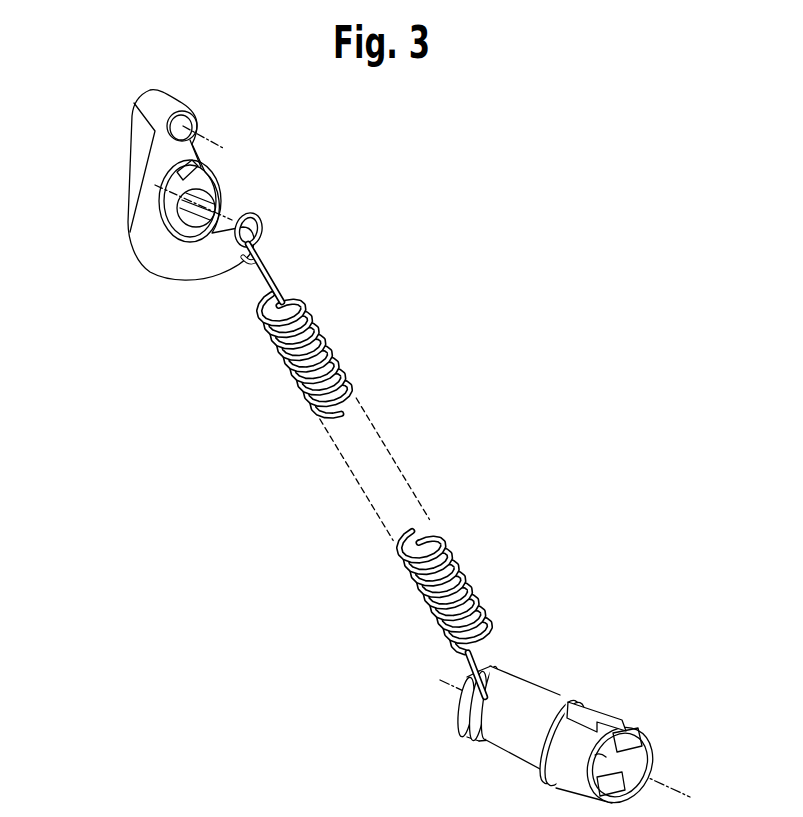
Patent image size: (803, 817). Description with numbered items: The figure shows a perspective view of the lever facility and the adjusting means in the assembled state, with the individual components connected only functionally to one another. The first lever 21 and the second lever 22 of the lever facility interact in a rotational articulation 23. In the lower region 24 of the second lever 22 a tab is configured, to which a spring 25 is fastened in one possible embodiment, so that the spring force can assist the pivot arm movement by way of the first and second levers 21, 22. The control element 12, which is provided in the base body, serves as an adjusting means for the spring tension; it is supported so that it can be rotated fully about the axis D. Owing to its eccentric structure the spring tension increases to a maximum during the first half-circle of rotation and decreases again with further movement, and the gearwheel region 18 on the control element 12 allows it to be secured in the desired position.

The control element 12 is at (553, 657).
The gearwheel region 18 is at (618, 717).
The first lever 21 is at (138, 144).
The second lever 22 is at (180, 263).
The rotational articulation 23 is at (185, 124).
The lower region 24 is at (272, 227).
The spring 25 is at (440, 553).
The axis D is at (667, 781).